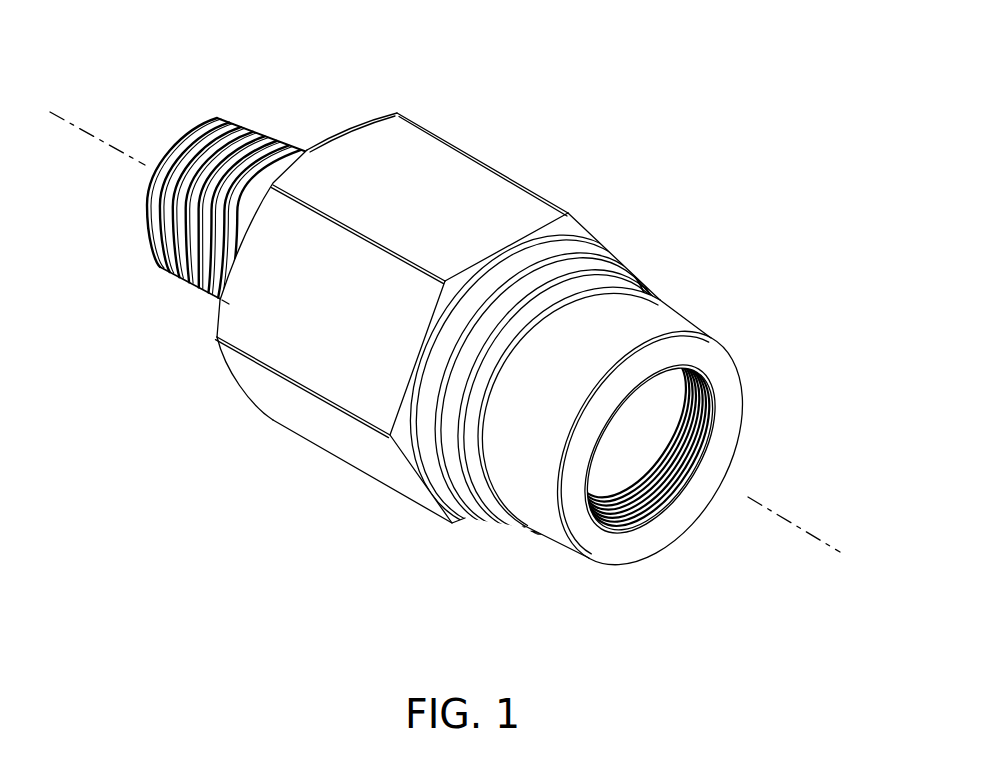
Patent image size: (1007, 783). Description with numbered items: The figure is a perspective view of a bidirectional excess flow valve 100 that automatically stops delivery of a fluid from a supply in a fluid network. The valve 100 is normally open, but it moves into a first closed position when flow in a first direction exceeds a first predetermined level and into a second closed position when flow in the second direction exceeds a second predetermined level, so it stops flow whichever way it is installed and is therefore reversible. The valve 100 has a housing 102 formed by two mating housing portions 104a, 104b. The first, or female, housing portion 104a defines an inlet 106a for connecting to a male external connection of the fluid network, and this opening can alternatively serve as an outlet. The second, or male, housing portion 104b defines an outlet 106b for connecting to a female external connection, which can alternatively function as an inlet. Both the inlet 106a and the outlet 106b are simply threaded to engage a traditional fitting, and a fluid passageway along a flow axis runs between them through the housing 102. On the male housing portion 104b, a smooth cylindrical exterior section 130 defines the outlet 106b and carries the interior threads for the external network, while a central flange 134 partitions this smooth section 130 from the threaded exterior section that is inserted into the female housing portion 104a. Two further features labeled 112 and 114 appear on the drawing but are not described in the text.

The bidirectional excess flow valve 100 is at (302, 86).
The housing 102 is at (570, 215).
The first housing portion 104a is at (393, 124).
The second housing portion 104b is at (712, 334).
The inlet 106a is at (177, 143).
The outlet 106b is at (720, 460).
The hex flat 112 is at (328, 432).
The thread relief 114 is at (188, 283).
The smooth exterior section 130 is at (550, 520).
The central flange 134 is at (642, 290).